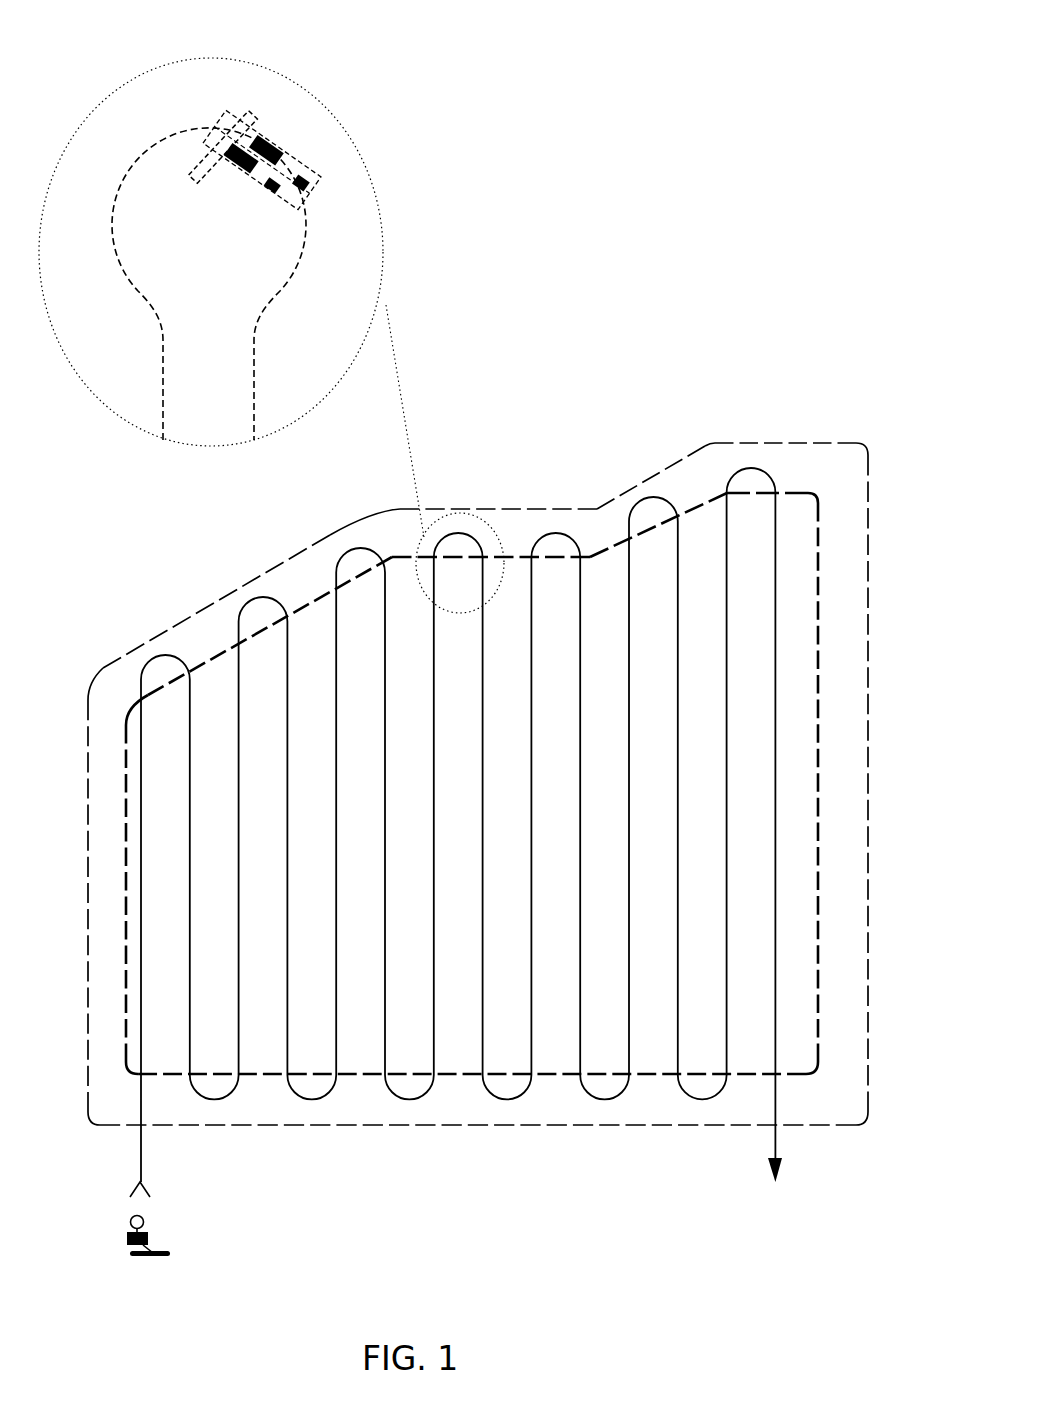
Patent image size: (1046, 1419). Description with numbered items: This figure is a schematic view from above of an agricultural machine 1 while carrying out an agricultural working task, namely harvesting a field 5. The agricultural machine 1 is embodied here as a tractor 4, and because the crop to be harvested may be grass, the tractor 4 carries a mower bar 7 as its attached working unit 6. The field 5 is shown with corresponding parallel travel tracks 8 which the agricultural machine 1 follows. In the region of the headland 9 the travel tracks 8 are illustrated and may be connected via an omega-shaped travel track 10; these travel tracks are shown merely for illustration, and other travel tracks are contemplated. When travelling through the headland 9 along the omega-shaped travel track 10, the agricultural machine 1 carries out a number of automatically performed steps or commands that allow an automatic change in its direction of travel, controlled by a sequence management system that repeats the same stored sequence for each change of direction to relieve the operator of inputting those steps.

The agricultural machine 1 is at (305, 682).
The tractor 4 is at (317, 168).
The field 5 is at (818, 443).
The working unit 6 is at (157, 91).
The mower bar 7 is at (212, 152).
The travel tracks 8 is at (483, 980).
The headland 9 is at (472, 750).
The Ω-shaped travel track 10 is at (297, 262).